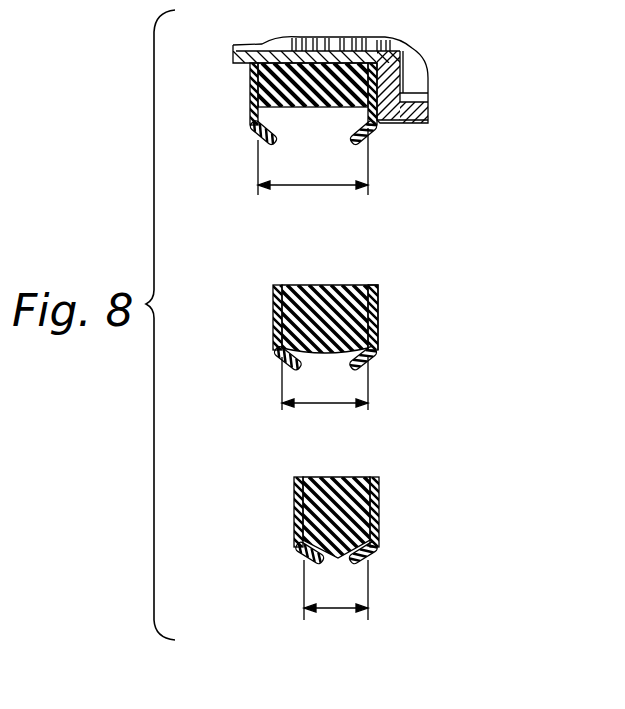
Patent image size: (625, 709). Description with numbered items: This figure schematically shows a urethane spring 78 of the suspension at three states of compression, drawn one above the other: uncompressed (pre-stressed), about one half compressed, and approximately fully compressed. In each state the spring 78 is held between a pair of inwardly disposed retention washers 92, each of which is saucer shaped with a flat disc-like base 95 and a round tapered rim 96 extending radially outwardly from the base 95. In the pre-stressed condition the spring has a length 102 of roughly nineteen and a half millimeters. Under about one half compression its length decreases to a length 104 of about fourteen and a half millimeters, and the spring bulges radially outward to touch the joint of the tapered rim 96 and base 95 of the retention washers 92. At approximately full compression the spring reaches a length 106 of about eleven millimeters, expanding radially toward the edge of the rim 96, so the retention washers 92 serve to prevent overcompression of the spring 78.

The urethane spring 78 is at (315, 109).
The retention washers 92 is at (243, 133).
The base 95 is at (378, 318).
The tapered rim 96 is at (372, 358).
The pre-stressed length 102 is at (313, 187).
The length at one half compression 104 is at (327, 405).
The length at full compression 106 is at (335, 612).